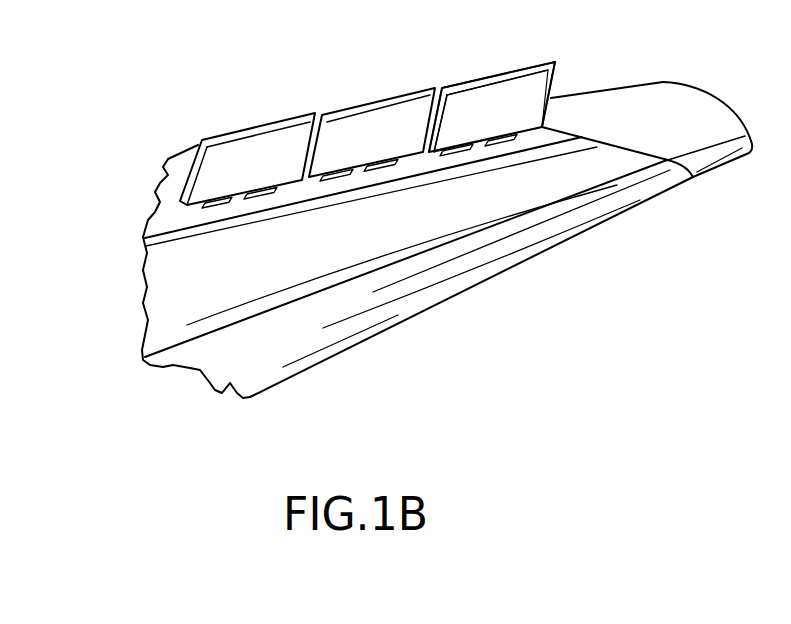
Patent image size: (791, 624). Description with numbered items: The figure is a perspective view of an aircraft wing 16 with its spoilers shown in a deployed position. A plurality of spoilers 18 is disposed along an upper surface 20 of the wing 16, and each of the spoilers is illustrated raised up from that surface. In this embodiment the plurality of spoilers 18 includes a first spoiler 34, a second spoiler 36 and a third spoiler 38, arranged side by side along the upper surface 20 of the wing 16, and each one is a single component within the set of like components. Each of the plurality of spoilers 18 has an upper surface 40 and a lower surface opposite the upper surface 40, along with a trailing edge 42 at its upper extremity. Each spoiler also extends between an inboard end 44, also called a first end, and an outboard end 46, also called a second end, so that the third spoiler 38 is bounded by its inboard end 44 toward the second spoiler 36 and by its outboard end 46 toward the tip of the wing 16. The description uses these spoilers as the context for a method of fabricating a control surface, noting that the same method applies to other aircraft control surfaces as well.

The wing 16 is at (120, 100).
The plurality of spoilers 18 is at (252, 98).
The upper surface 20 is at (235, 273).
The first spoiler 34 is at (287, 127).
The second spoiler 36 is at (392, 101).
The third spoiler 38 is at (485, 90).
The upper surface 40 is at (516, 123).
The trailing edge 42 is at (525, 67).
The inboard end 44 is at (447, 92).
The outboard end 46 is at (556, 82).